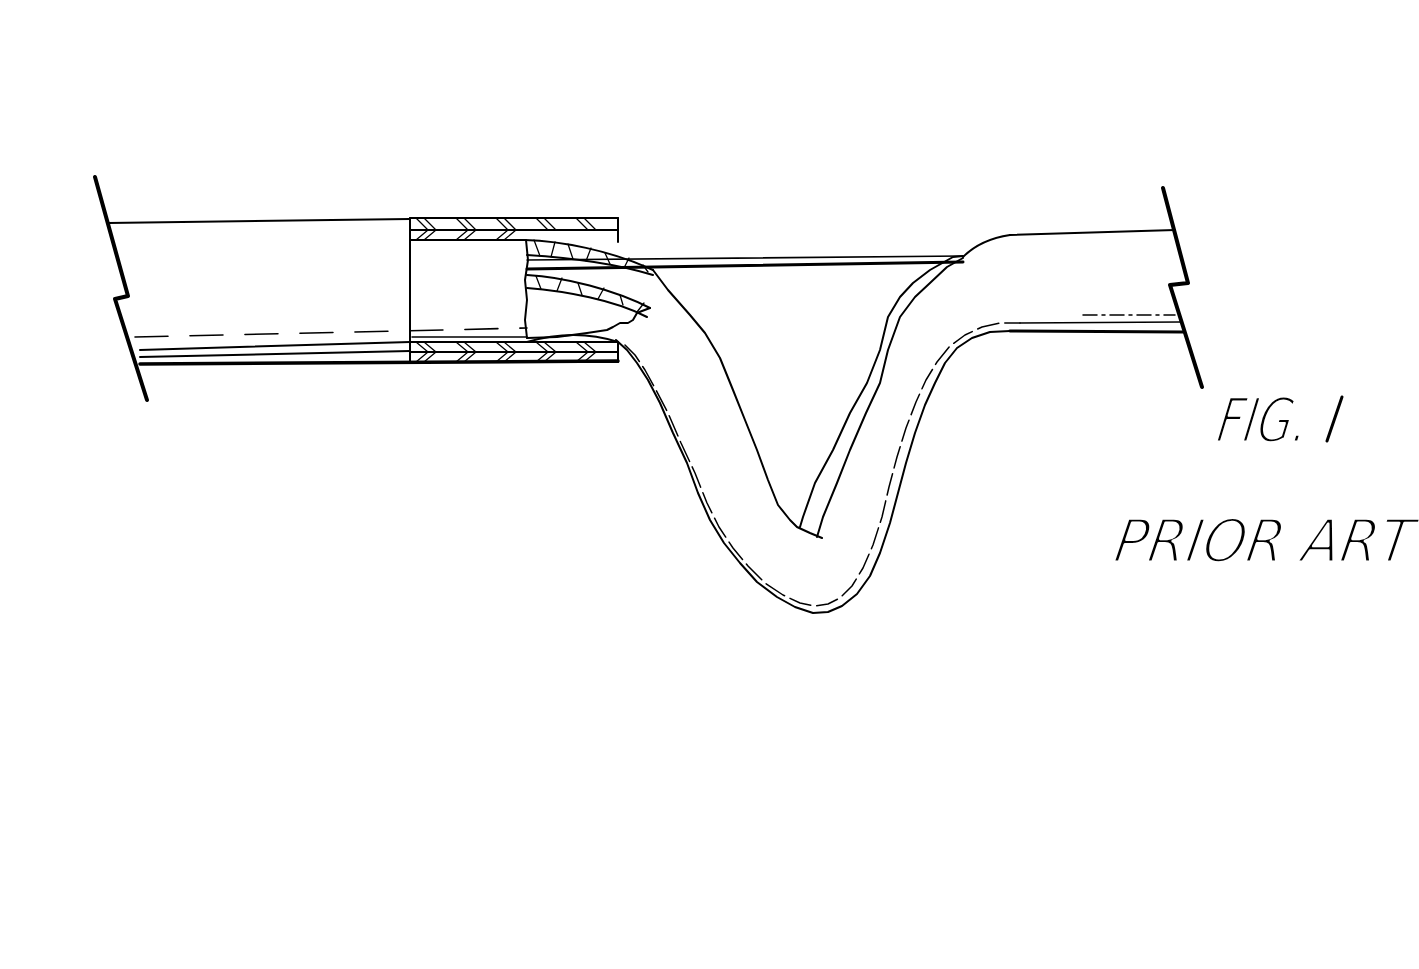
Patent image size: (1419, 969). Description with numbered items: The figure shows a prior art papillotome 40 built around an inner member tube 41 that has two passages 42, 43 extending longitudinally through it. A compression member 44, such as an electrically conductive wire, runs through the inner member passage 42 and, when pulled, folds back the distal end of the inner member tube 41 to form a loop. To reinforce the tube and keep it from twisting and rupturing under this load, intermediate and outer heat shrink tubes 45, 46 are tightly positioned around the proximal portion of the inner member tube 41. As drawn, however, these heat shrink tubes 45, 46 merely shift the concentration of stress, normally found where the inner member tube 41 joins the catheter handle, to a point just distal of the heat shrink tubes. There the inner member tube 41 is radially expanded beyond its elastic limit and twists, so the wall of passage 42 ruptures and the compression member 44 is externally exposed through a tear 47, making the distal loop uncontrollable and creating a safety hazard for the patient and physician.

The prior art papillotome 40 is at (918, 94).
The inner member tube 41 is at (1030, 242).
The passage 42 is at (650, 284).
The passage 43 is at (578, 315).
The compression member 44 is at (797, 262).
The intermediate heat shrink tube 45 is at (483, 235).
The outer heat shrink tube 46 is at (533, 223).
The tear 47 is at (873, 397).